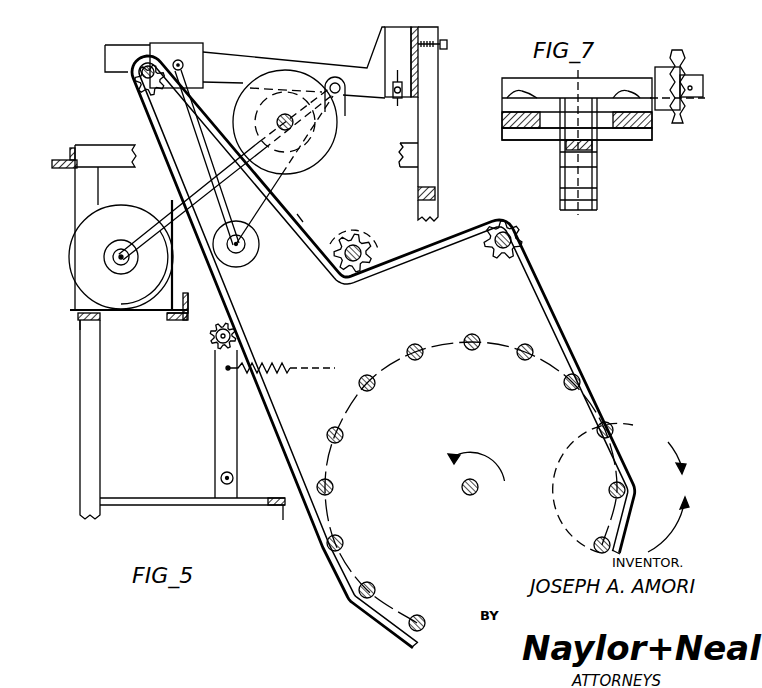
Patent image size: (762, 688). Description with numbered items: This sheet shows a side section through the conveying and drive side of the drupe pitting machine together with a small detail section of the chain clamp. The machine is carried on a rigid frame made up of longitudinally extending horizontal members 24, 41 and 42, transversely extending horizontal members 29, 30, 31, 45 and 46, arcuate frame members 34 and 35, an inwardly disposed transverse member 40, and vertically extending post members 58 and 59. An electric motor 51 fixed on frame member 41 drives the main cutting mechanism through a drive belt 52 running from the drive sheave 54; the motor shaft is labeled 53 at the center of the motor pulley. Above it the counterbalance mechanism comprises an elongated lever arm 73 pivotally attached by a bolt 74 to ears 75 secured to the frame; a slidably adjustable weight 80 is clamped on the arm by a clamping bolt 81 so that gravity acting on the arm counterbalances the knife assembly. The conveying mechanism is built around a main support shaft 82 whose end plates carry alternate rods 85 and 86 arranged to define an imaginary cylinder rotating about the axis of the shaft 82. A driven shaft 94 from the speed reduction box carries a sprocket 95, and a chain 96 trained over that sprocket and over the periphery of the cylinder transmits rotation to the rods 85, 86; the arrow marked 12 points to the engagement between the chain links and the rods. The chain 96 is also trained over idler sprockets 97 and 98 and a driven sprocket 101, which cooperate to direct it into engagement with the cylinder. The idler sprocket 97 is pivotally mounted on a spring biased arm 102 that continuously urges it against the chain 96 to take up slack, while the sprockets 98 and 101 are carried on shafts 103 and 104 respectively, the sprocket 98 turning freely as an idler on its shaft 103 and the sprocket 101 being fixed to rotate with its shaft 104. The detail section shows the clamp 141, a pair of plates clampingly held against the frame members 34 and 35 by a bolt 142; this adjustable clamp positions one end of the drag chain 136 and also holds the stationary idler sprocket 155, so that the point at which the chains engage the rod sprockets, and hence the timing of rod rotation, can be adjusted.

In FIG. 5, the article path 12 is at (509, 482).
In FIG. 5, the longitudinal frame member 24 is at (97, 157).
In FIG. 5, the transverse frame member 29 is at (65, 165).
In FIG. 5, the transverse frame member 30 is at (78, 318).
In FIG. 5, the transverse frame member 31 is at (425, 28).
In FIG. 7, the arcuate frame member 34 is at (652, 119).
In FIG. 7, the arcuate frame member 35 is at (505, 123).
In FIG. 5, the transverse member 40 is at (280, 515).
In FIG. 5, the longitudinal frame member 41 is at (133, 317).
In FIG. 5, the longitudinal frame member 42 is at (142, 508).
In FIG. 5, the transverse frame member 45 is at (438, 193).
In FIG. 5, the transverse frame member 46 is at (173, 323).
In FIG. 5, the electric motor 51 is at (80, 238).
In FIG. 5, the drive belt 52 is at (166, 191).
In FIG. 5, the pulley shaft 53 is at (112, 262).
In FIG. 5, the drive sheave 54 is at (330, 154).
In FIG. 5, the post member 58 is at (82, 419).
In FIG. 5, the post member 59 is at (430, 101).
In FIG. 5, the lever arm 73 is at (233, 63).
In FIG. 5, the bolt 74 is at (395, 100).
In FIG. 5, the ears 75 is at (400, 33).
In FIG. 5, the adjustable weight 80 is at (171, 47).
In FIG. 5, the clamping bolt 81 is at (183, 60).
In FIG. 5, the main support shaft 82 is at (461, 492).
In FIG. 5, the rods 85 is at (600, 438).
In FIG. 5, the rods 86 is at (608, 490).
In FIG. 5, the driven shaft 94 is at (150, 64).
In FIG. 5, the sprocket 95 is at (137, 83).
In FIG. 5, the chain 96 is at (297, 213).
In FIG. 5, the idler sprocket 97 is at (205, 343).
In FIG. 5, the idler sprocket 98 is at (343, 230).
In FIG. 5, the driven sprocket 101 is at (516, 241).
In FIG. 5, the spring biased arm 102 is at (222, 420).
In FIG. 5, the shaft 103 is at (367, 244).
In FIG. 5, the shaft 104 is at (493, 252).
In FIG. 7, the drag chain 136 is at (595, 178).
In FIG. 7, the clamp 141 is at (550, 103).
In FIG. 7, the bolt 142 is at (563, 152).
In FIG. 7, the stationary idler sprocket 155 is at (678, 53).